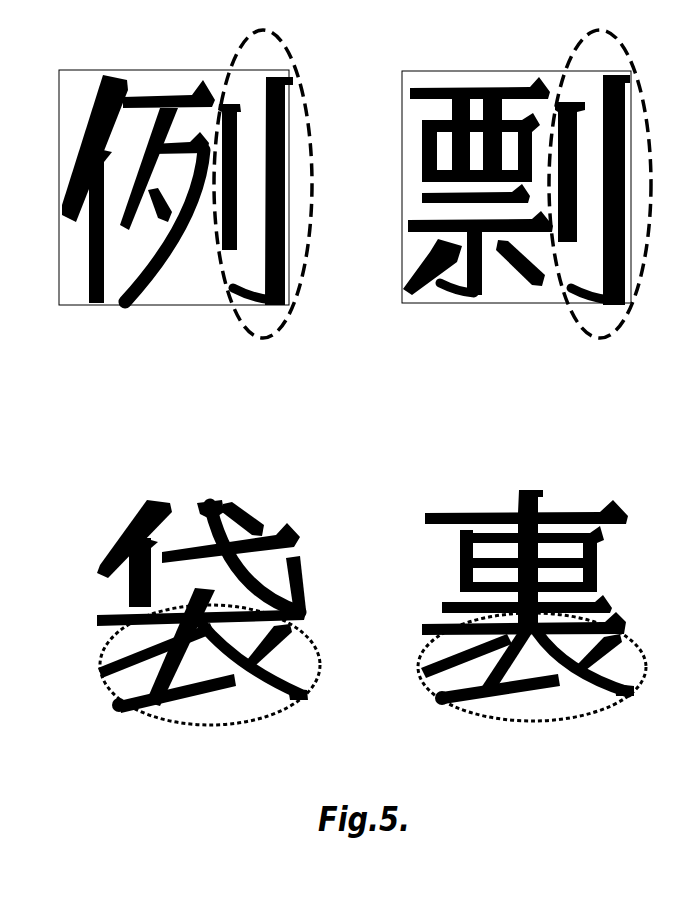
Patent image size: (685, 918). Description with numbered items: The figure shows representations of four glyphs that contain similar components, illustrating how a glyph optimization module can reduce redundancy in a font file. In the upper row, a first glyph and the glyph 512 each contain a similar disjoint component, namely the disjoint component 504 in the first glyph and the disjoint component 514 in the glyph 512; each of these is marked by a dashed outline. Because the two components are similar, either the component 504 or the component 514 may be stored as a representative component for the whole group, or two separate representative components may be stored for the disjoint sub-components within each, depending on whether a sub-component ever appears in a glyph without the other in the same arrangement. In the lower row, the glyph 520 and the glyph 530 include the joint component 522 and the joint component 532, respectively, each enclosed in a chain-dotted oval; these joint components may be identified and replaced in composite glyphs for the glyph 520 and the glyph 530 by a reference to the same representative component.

The disjoint component 504 is at (273, 342).
The glyph 512 is at (505, 300).
The disjoint component 514 is at (608, 342).
The glyph 520 is at (178, 489).
The joint component 522 is at (195, 724).
The glyph 530 is at (500, 481).
The joint component 532 is at (527, 722).